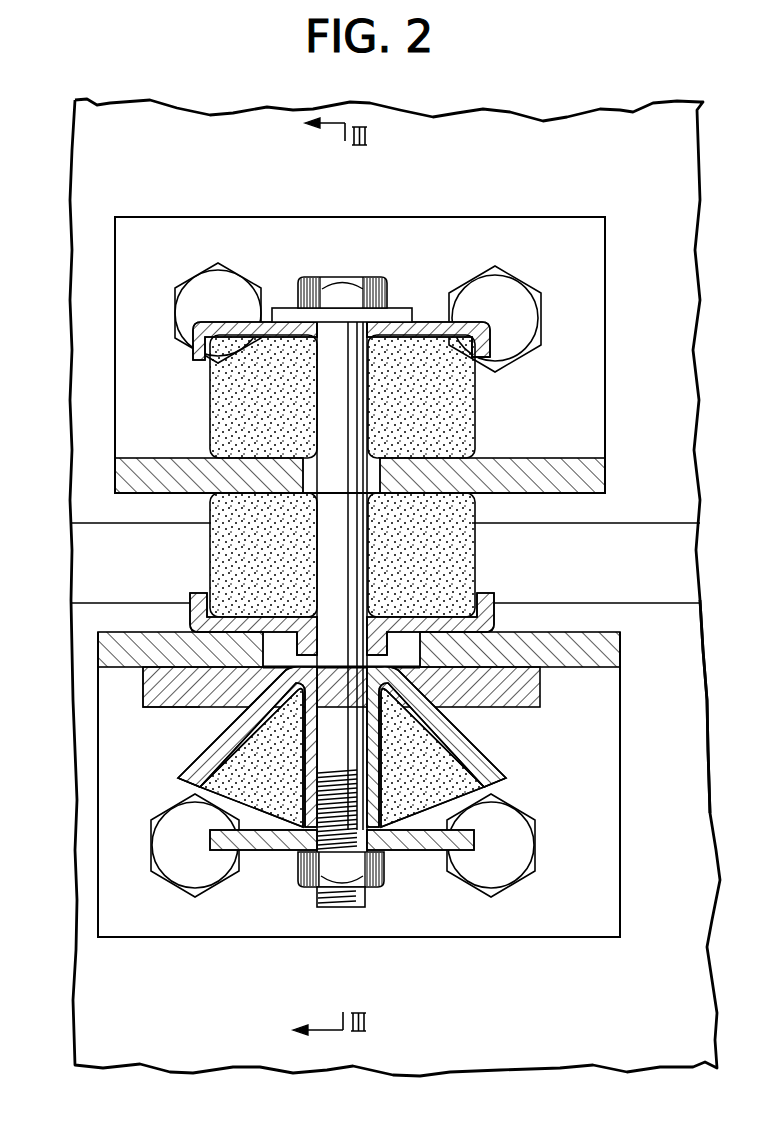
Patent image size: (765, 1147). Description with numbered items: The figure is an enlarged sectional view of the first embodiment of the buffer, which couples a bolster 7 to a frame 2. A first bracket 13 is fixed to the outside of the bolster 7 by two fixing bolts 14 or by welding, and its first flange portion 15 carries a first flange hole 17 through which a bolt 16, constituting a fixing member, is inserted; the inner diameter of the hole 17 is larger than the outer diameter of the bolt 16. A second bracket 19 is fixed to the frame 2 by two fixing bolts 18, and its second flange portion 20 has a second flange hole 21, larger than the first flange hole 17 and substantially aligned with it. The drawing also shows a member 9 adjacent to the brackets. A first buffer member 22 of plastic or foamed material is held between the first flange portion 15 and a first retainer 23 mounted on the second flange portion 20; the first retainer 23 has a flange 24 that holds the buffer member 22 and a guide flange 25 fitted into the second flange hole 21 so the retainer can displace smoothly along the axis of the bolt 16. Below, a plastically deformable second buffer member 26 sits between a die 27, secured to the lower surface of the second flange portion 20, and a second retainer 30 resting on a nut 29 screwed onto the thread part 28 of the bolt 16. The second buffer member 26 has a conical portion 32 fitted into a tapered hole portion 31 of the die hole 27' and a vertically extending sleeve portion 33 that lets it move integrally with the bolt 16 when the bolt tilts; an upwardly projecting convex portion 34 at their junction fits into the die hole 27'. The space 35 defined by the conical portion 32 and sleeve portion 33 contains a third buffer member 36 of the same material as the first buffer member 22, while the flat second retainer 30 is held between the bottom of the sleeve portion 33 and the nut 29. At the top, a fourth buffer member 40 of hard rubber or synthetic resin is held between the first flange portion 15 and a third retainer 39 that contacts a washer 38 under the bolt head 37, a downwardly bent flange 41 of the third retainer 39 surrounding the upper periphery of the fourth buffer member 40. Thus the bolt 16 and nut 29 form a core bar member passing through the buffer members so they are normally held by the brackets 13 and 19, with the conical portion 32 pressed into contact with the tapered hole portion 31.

The frame 2 is at (690, 718).
The bolster 7 is at (648, 118).
The cross member 9 is at (675, 550).
The first bracket 13 is at (540, 208).
The fixing bolts 14 is at (205, 292).
The first flange portion 15 is at (605, 470).
The bolt 16 is at (318, 398).
The first flange hole 17 is at (306, 496).
The fixing bolts 18 is at (172, 860).
The second bracket 19 is at (632, 813).
The second flange portion 20 is at (622, 645).
The second flange hole 21 is at (268, 650).
The first buffer member 22 is at (232, 548).
The first retainer 23 is at (406, 602).
The flange 24 is at (200, 605).
The guide flange 25 is at (416, 654).
The second buffer member 26 is at (176, 764).
The die 27 is at (326, 708).
The die hole 27' is at (196, 687).
The thread part 28 is at (331, 898).
The nut 29 is at (384, 873).
The second retainer 30 is at (265, 852).
The tapered hole portion 31 is at (232, 712).
The conical portion 32 is at (470, 744).
The sleeve portion 33 is at (297, 742).
The convex portion 34 is at (395, 700).
The space 35 is at (489, 786).
The third buffer member 36 is at (368, 890).
The bolt head 37 is at (342, 295).
The washer 38 is at (283, 308).
The third retainer 39 is at (258, 322).
The fourth buffer member 40 is at (470, 401).
The flange 41 is at (493, 337).